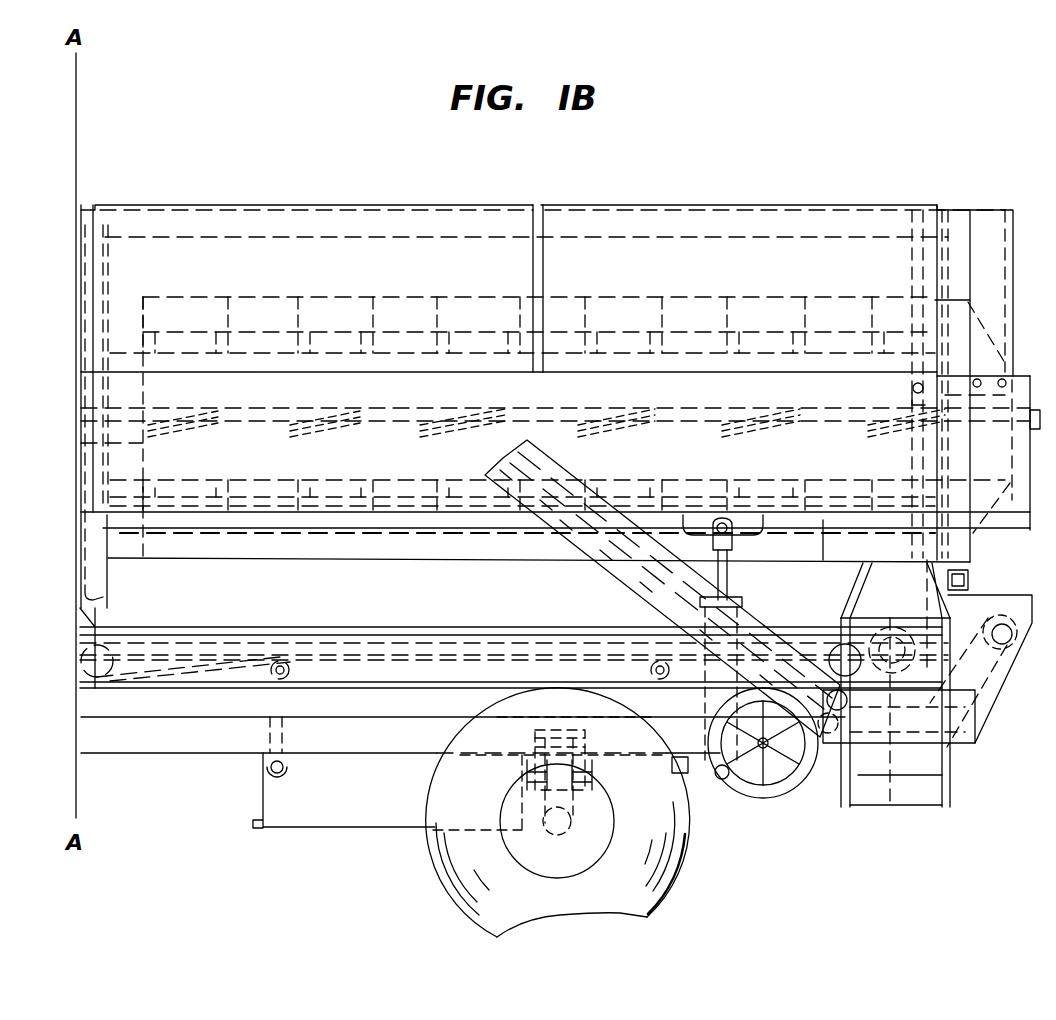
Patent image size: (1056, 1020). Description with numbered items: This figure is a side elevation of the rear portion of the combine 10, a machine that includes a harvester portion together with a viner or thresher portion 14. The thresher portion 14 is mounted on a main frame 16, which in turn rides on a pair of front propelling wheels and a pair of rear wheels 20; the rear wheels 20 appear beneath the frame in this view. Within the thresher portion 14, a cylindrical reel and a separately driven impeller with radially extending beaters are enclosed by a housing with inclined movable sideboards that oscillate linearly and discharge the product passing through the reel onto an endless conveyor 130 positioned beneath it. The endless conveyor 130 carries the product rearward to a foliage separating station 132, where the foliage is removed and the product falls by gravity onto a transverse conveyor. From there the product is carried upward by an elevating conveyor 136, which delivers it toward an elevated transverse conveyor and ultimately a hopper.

The combine 10 is at (186, 199).
The viner or thresher portion 14 is at (412, 198).
The main frame 16 is at (200, 753).
The rear wheels 20 is at (432, 853).
The endless conveyor 130 is at (373, 642).
The foliage separating station 132 is at (972, 617).
The elevating conveyor 136 is at (545, 488).